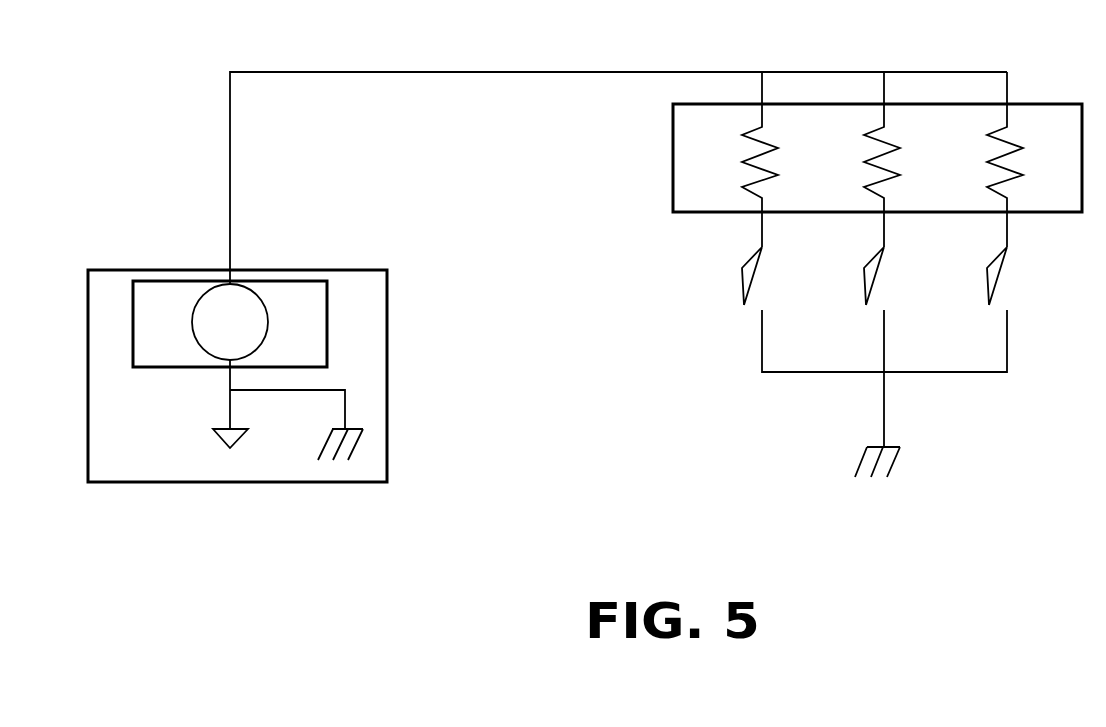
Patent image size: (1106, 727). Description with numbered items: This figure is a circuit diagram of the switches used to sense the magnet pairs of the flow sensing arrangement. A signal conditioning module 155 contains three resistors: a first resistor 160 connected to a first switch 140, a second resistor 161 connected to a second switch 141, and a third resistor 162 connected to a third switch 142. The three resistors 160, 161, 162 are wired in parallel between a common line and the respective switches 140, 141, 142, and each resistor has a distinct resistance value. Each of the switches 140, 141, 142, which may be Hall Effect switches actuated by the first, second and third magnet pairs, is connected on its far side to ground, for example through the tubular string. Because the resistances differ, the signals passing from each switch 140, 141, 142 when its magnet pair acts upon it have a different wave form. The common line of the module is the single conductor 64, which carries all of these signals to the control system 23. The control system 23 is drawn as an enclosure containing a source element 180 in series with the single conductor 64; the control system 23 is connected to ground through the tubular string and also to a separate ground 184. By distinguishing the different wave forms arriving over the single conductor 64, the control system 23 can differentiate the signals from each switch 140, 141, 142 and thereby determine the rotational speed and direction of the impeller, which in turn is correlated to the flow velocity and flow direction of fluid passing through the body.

The control system 23 is at (397, 459).
The single conductor 64 is at (229, 200).
The first switch 140 is at (716, 273).
The second switch 141 is at (844, 322).
The third switch 142 is at (1043, 291).
The signal conditioning module 155 is at (666, 135).
The first resistor 160 is at (778, 148).
The second resistor 161 is at (899, 148).
The third resistor 162 is at (1022, 148).
The power source 180 is at (280, 281).
The separate ground 184 is at (227, 420).